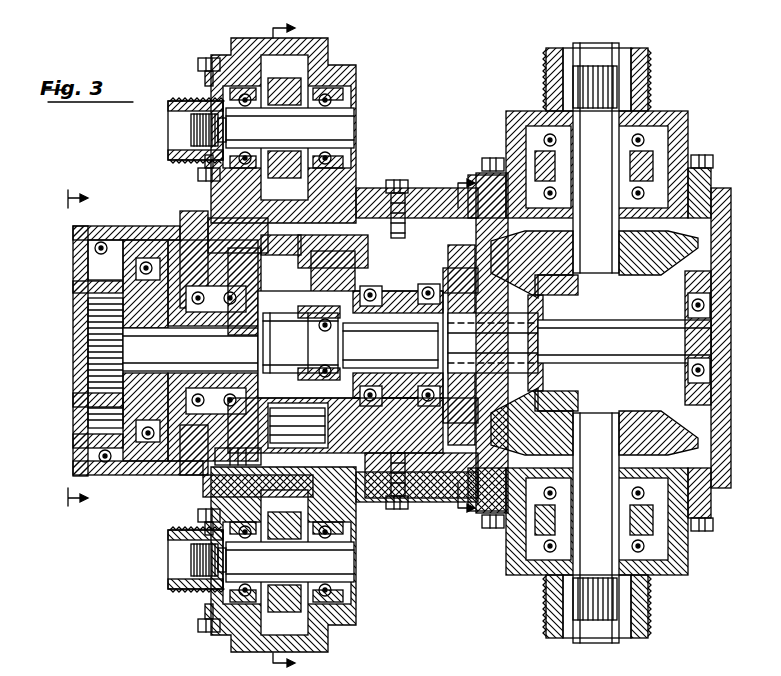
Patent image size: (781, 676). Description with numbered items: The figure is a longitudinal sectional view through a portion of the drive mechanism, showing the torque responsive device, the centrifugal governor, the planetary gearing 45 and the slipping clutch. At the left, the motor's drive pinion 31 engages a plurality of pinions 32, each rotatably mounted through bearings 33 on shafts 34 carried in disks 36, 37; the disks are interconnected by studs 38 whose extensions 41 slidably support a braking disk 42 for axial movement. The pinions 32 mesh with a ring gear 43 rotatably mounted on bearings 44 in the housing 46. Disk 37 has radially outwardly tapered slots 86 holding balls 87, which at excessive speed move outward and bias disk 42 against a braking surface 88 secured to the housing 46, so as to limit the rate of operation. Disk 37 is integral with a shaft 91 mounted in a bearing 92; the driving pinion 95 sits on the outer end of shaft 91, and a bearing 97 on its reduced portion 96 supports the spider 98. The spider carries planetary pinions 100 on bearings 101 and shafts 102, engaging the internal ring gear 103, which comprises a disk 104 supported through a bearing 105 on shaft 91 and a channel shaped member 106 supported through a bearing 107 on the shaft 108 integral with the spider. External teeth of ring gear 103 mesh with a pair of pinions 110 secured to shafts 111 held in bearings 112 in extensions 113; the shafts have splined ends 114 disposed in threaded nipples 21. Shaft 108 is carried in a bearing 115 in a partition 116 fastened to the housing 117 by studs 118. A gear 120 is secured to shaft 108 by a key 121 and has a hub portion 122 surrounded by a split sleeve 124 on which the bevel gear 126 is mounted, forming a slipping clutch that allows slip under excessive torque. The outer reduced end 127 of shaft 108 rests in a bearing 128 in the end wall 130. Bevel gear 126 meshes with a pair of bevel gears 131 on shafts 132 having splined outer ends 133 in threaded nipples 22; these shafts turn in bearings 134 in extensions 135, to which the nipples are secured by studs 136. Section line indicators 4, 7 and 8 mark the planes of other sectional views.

The section line 4- 4 is at (66, 346).
The section line 7- 7 is at (287, 344).
The section line 8- 8 is at (458, 342).
The threaded nipple 21 is at (165, 97).
The threaded nipple 22 is at (645, 62).
The drive pinion 31 is at (82, 340).
The pinion 32 is at (80, 392).
The bearing 33 is at (82, 412).
The shaft 34 is at (85, 403).
The disk 36 is at (65, 279).
The disk 37 is at (136, 245).
The stud 38 is at (65, 300).
The extension 41 is at (137, 347).
The braking disk 42 is at (181, 232).
The ring gear 43 is at (68, 438).
The bearing 44 is at (105, 225).
The planetary gearing 45 is at (137, 169).
The housing 46 is at (88, 218).
The slot 86 is at (126, 460).
The ball 87 is at (162, 235).
The braking surface 88 is at (180, 215).
The shaft 91 is at (167, 364).
The bearing 92 is at (181, 346).
The driving pinion 95 is at (295, 331).
The reduced portion 96 is at (313, 339).
The bearing 97 is at (358, 345).
The spider 98 is at (318, 262).
The planetary pinion 100 is at (326, 423).
The bearing 101 is at (286, 406).
The shaft 102 is at (326, 405).
The internal ring gear 103 is at (318, 240).
The disk 104 is at (236, 237).
The bearing 105 is at (223, 326).
The channel shaped member 106 is at (351, 240).
The bearing 107 is at (385, 345).
The shaft 108 is at (412, 323).
The pinion 110 is at (305, 62).
The shaft 111 is at (325, 110).
The bearing 112 is at (218, 48).
The extension 113 is at (338, 118).
The splined end 114 is at (185, 123).
The bearing 115 is at (431, 251).
The partition 116 is at (401, 491).
The housing 117 is at (436, 190).
The stud 118 is at (405, 157).
The gear 120 is at (440, 437).
The key 121 is at (491, 311).
The hub portion 122 is at (538, 301).
The split sleeve 124 is at (538, 280).
The bevel gear 126 is at (538, 392).
The outer reduced end 127 is at (660, 308).
The bearing 128 is at (703, 286).
The end wall 130 is at (733, 222).
The bevel gear 131 is at (657, 265).
The shaft 132 is at (592, 275).
The splined outer end 133 is at (583, 60).
The bearing 134 is at (578, 505).
The extension 135 is at (706, 175).
The stud 136 is at (510, 90).